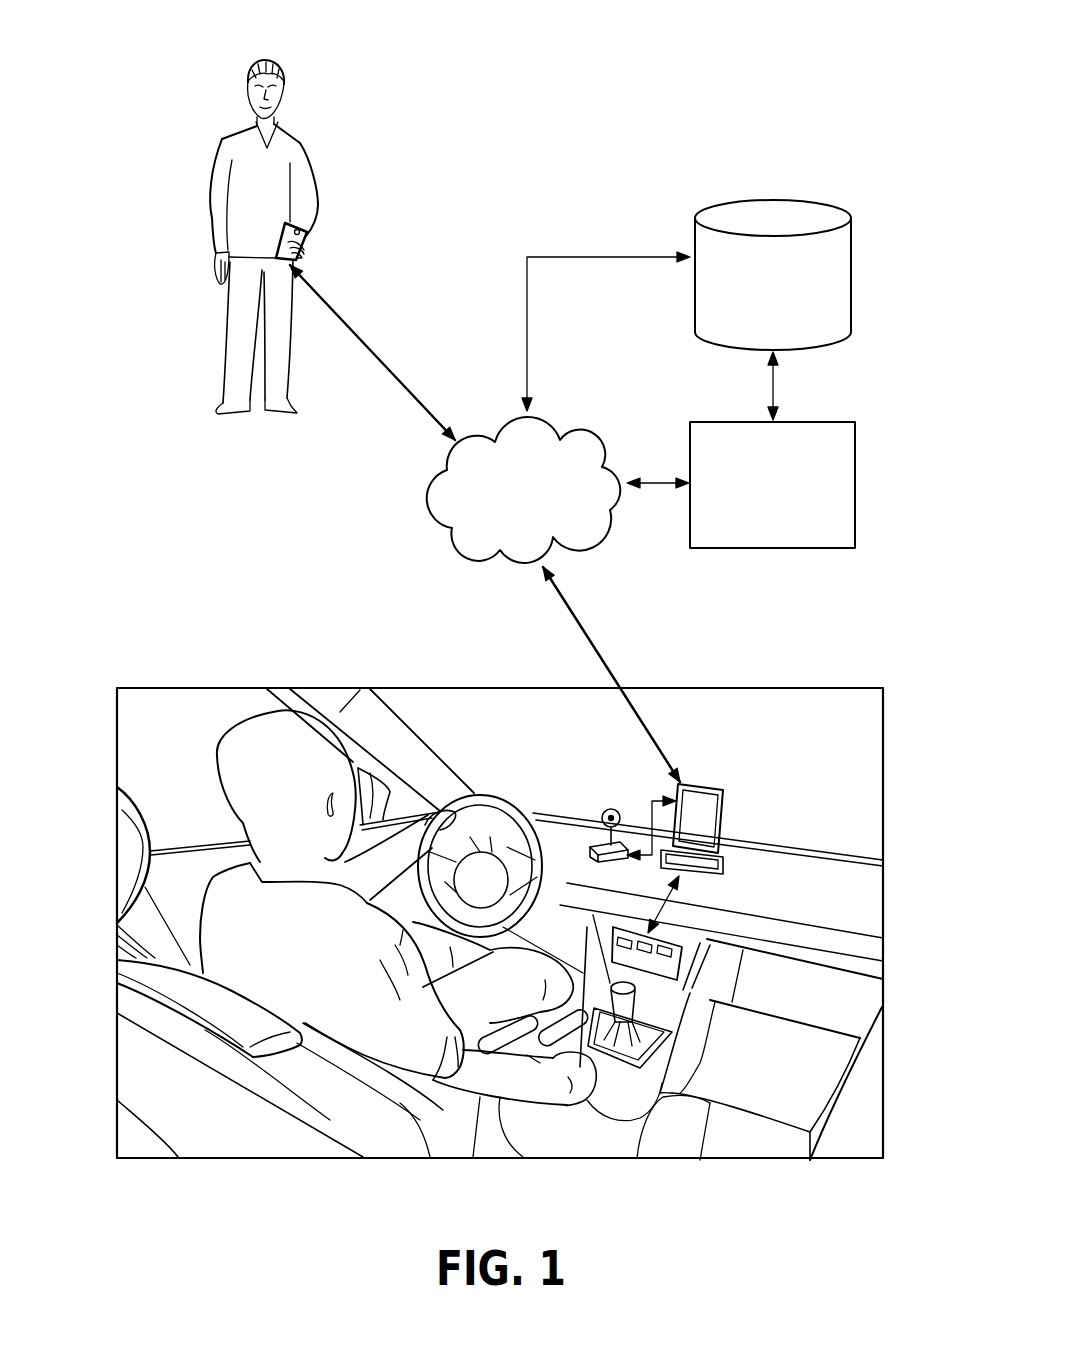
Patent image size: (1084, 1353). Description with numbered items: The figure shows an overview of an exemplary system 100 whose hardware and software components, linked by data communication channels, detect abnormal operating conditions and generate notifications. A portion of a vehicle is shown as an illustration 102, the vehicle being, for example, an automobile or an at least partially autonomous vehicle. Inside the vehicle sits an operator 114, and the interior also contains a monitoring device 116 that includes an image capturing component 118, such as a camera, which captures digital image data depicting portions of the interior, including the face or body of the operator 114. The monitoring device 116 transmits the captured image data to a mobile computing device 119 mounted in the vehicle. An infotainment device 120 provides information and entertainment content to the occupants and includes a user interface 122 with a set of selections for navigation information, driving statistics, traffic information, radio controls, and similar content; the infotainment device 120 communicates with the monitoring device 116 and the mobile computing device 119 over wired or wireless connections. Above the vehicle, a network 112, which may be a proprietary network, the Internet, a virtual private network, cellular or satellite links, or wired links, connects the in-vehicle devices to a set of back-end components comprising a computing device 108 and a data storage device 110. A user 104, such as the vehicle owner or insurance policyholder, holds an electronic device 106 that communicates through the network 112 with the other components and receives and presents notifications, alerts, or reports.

The system 100 is at (590, 56).
The illustration of a portion of the vehicle 102 is at (822, 688).
The user 104 is at (292, 133).
The electronic device 106 is at (302, 270).
The computing device(s) 108 is at (817, 422).
The data storage device(s) 110 is at (810, 204).
The network(s) 112 is at (588, 433).
The operator 114 is at (214, 758).
The monitoring device 116 is at (591, 845).
The image capturing component(s) 118 is at (612, 810).
The mobile computing device 119 is at (704, 784).
The infotainment device 120 is at (692, 946).
The user interface 122 is at (637, 956).